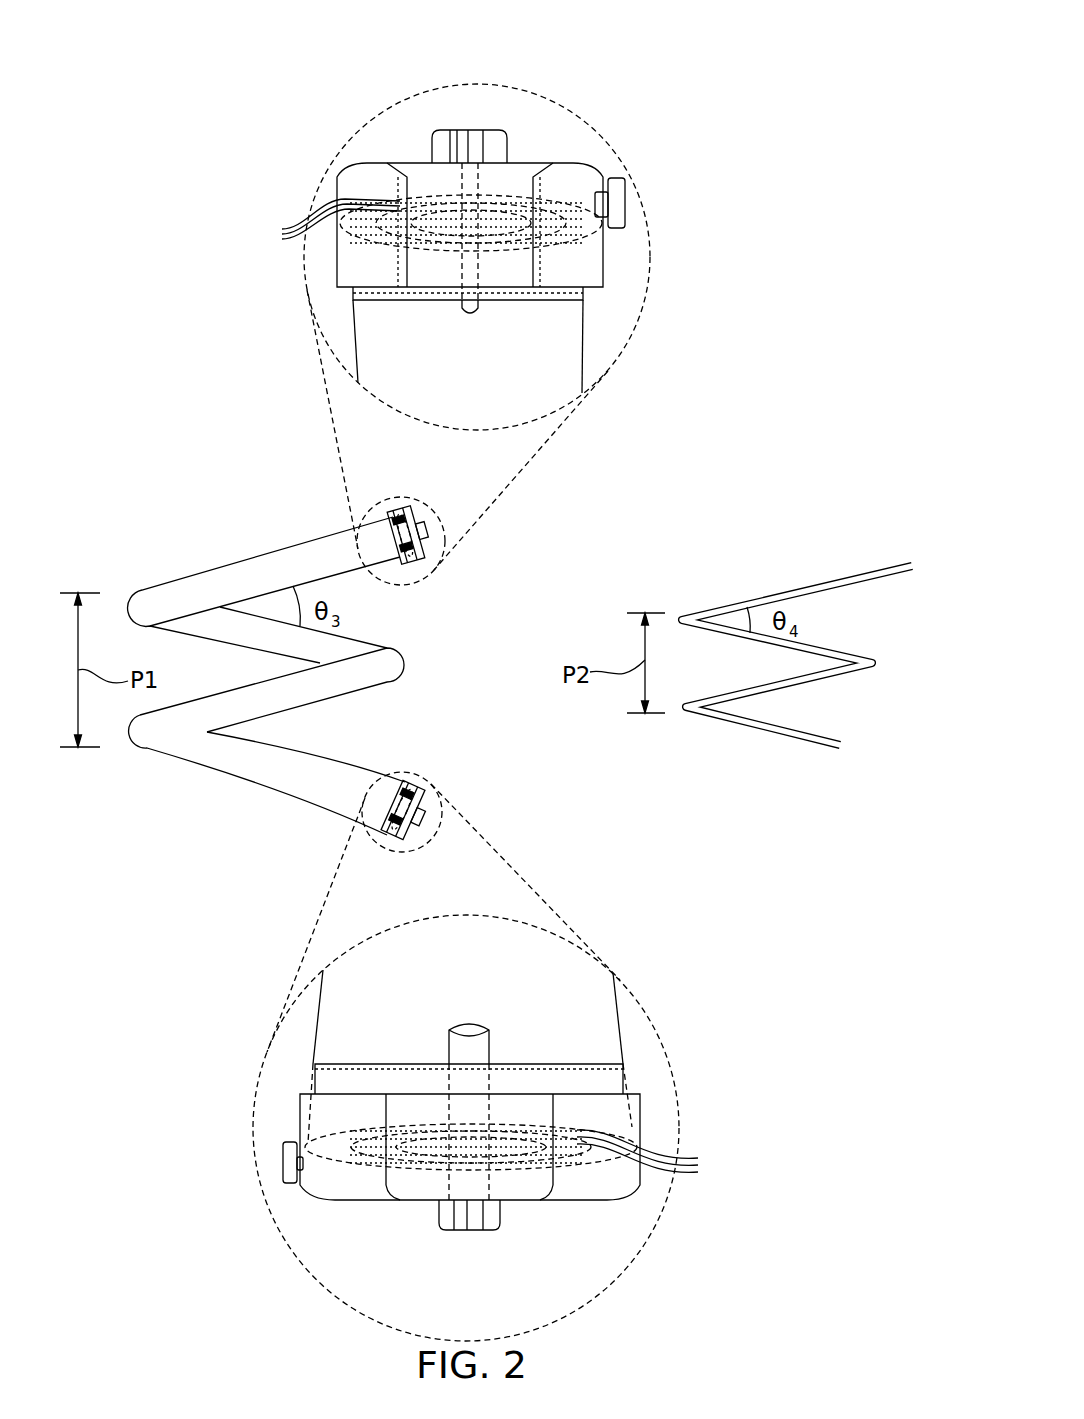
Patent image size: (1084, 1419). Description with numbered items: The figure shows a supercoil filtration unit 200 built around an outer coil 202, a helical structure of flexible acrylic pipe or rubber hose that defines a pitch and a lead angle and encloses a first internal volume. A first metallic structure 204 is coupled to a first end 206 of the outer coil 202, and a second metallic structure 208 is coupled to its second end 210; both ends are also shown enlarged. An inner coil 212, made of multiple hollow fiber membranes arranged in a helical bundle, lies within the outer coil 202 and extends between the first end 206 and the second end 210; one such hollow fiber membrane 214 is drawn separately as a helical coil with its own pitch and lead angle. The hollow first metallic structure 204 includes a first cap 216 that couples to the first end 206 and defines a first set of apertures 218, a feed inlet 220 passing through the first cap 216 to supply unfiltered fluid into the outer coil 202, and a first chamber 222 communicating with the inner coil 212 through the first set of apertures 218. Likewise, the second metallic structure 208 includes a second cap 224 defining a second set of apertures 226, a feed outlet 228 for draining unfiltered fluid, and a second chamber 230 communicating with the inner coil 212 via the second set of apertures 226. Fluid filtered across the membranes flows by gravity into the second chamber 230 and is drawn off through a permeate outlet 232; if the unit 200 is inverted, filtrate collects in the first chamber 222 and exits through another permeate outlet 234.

The supercoil filtration unit 200 is at (185, 45).
The outer coil 202 is at (213, 503).
The first metallic structure 204 is at (480, 235).
The first end 206 is at (583, 347).
The second metallic structure 208 is at (468, 1128).
The second end 210 is at (323, 1000).
The inner coil 212 is at (816, 592).
The hollow fiber membrane 214 is at (763, 597).
The first cap 216 is at (590, 294).
The first set of apertures 218 is at (318, 223).
The feed inlet 220 is at (480, 190).
The first chamber 222 is at (433, 185).
The second cap 224 is at (610, 1083).
The second set of apertures 226 is at (663, 1151).
The feed outlet 228 is at (467, 1188).
The second chamber 230 is at (330, 1187).
The permeate outlet 232 is at (283, 1176).
The another permeate outlet 234 is at (626, 206).